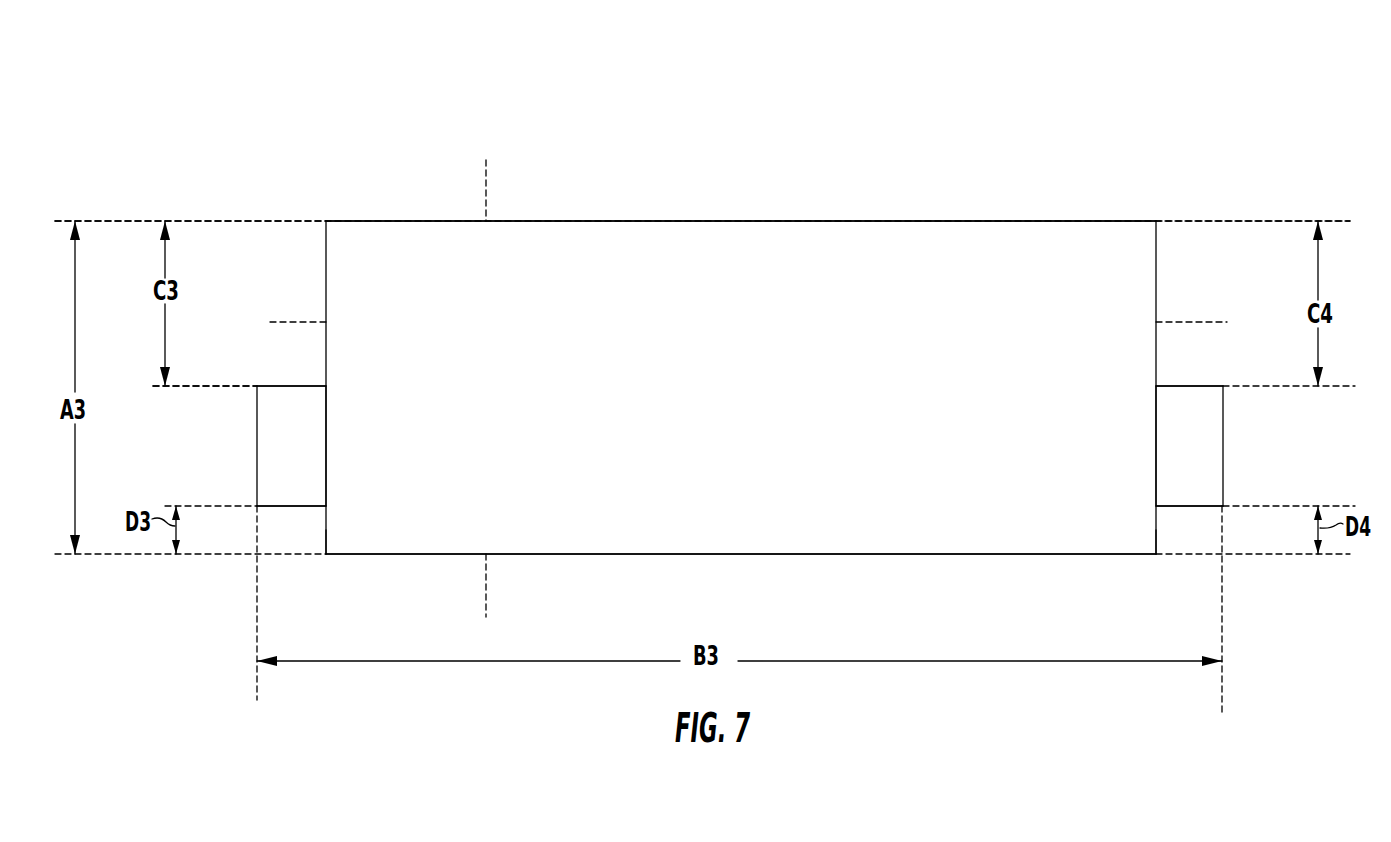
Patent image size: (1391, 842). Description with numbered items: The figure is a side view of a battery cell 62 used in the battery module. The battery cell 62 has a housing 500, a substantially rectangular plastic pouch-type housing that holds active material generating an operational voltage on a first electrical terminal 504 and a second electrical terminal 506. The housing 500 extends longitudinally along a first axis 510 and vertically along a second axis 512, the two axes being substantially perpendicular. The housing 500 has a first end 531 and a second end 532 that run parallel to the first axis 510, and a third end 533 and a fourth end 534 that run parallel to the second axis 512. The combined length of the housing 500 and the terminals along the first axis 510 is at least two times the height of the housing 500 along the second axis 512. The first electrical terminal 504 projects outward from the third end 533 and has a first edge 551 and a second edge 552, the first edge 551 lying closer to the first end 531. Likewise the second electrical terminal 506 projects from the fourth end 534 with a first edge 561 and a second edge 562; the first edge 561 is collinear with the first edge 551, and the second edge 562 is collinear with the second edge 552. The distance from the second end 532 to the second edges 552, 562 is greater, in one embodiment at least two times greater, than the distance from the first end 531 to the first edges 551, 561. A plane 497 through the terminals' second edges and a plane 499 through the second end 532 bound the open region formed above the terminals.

The battery cell 62 is at (845, 92).
The housing 500 is at (652, 243).
The second end 532 is at (771, 221).
The first end 531 is at (752, 554).
The plane 499 is at (226, 221).
The second axis 512 is at (486, 181).
The first axis 510 is at (283, 322).
The plane 497 is at (198, 387).
The first electrical terminal 504 is at (264, 448).
The second electrical terminal 506 is at (1223, 445).
The second edge of the first electrical terminal 552 is at (292, 386).
The second edge of the second electrical terminal 562 is at (1177, 386).
The first edge of the first electrical terminal 551 is at (284, 506).
The first edge of the second electrical terminal 561 is at (1198, 506).
The third end 533 is at (325, 540).
The fourth end 534 is at (1157, 542).